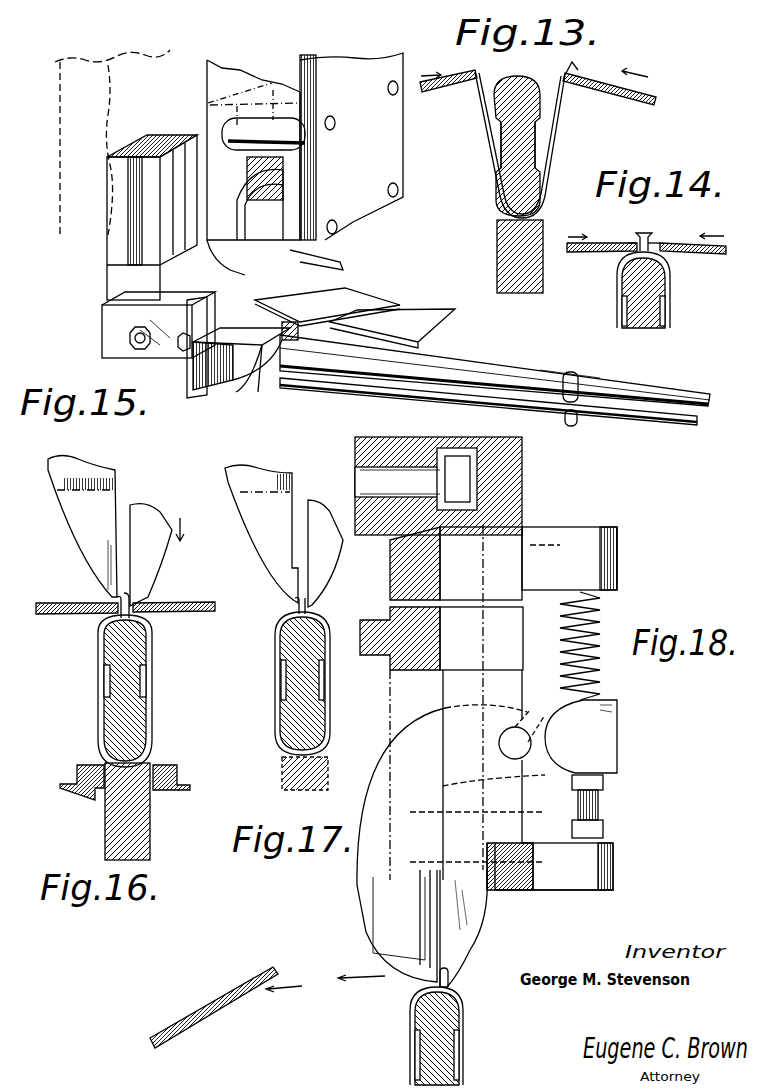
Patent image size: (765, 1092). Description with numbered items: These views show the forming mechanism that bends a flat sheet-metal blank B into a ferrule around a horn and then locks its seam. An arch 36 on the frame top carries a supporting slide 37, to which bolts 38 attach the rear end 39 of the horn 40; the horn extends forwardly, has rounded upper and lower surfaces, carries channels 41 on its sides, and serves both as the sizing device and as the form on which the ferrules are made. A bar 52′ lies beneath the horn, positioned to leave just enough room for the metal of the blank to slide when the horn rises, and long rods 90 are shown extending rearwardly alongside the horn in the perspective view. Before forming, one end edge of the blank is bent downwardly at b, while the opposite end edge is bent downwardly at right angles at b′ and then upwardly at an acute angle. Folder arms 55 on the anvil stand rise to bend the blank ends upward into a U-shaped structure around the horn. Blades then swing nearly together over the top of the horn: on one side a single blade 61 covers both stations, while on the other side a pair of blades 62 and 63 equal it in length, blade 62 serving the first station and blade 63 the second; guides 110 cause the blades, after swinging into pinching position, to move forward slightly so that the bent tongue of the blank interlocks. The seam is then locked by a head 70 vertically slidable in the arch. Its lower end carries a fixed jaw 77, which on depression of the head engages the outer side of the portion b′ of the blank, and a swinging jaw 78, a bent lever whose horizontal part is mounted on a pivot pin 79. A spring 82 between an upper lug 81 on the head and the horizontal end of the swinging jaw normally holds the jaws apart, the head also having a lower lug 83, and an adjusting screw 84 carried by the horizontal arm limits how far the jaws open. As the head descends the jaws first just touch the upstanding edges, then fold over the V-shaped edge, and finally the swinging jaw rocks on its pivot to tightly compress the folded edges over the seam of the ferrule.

In FIG. 15, the arch 36 is at (105, 247).
In FIG. 15, the supporting slide 37 is at (108, 293).
In FIG. 15, the bolts 38 is at (135, 348).
In FIG. 15, the rear end 39 is at (103, 345).
In FIG. 13, the horn 40 is at (505, 190).
In FIG. 14, the horn 40 is at (672, 288).
In FIG. 15, the horn 40 is at (555, 370).
In FIG. 16, the horn 40 is at (105, 648).
In FIG. 17, the horn 40 is at (270, 656).
In FIG. 18, the horn 40 is at (420, 1012).
In FIG. 13, the channels 41 is at (497, 152).
In FIG. 14, the channels 41 is at (668, 318).
In FIG. 15, the channels 41 is at (498, 368).
In FIG. 16, the channels 41 is at (104, 682).
In FIG. 17, the channels 41 is at (322, 690).
In FIG. 18, the channels 41 is at (415, 1048).
In FIG. 13, the bar 52′ is at (497, 250).
In FIG. 16, the bar 52′ is at (142, 822).
In FIG. 17, the bar 52′ is at (282, 778).
In FIG. 16, the folder arms 55 is at (168, 768).
In FIG. 13, the single blade 61 is at (467, 126).
In FIG. 14, the single blade 61 is at (604, 254).
In FIG. 15, the single blade 61 is at (258, 392).
In FIG. 16, the single blade 61 is at (52, 603).
In FIG. 13, the blade 62 is at (647, 102).
In FIG. 14, the blade 62 is at (698, 254).
In FIG. 15, the blade 62 is at (351, 294).
In FIG. 16, the blade 62 is at (180, 604).
In FIG. 18, the blade 62 is at (225, 998).
In FIG. 15, the blade 63 is at (412, 312).
In FIG. 15, the head 70 is at (358, 228).
In FIG. 15, the fixed jaw 77 is at (345, 278).
In FIG. 16, the fixed jaw 77 is at (148, 578).
In FIG. 17, the fixed jaw 77 is at (327, 593).
In FIG. 18, the fixed jaw 77 is at (487, 913).
In FIG. 15, the swinging jaw 78 is at (256, 167).
In FIG. 16, the swinging jaw 78 is at (98, 560).
In FIG. 17, the swinging jaw 78 is at (276, 594).
In FIG. 18, the swinging jaw 78 is at (390, 910).
In FIG. 18, the pivot pin 79 is at (528, 738).
In FIG. 18, the upper lug 81 is at (618, 555).
In FIG. 18, the spring 82 is at (600, 630).
In FIG. 18, the lower lug 83 is at (614, 866).
In FIG. 18, the adjusting screw 84 is at (603, 806).
In FIG. 15, the guide rods 90 is at (352, 382).
In FIG. 15, the guides 110 is at (205, 390).
In FIG. 13, the blank B is at (560, 140).
In FIG. 14, the blank B is at (617, 300).
In FIG. 15, the blank B is at (236, 392).
In FIG. 17, the blank B is at (330, 712).
In FIG. 18, the blank B is at (460, 990).
In FIG. 14, the downwardly bent end edge b is at (636, 241).
In FIG. 14, the downwardly bent part b′ is at (658, 238).